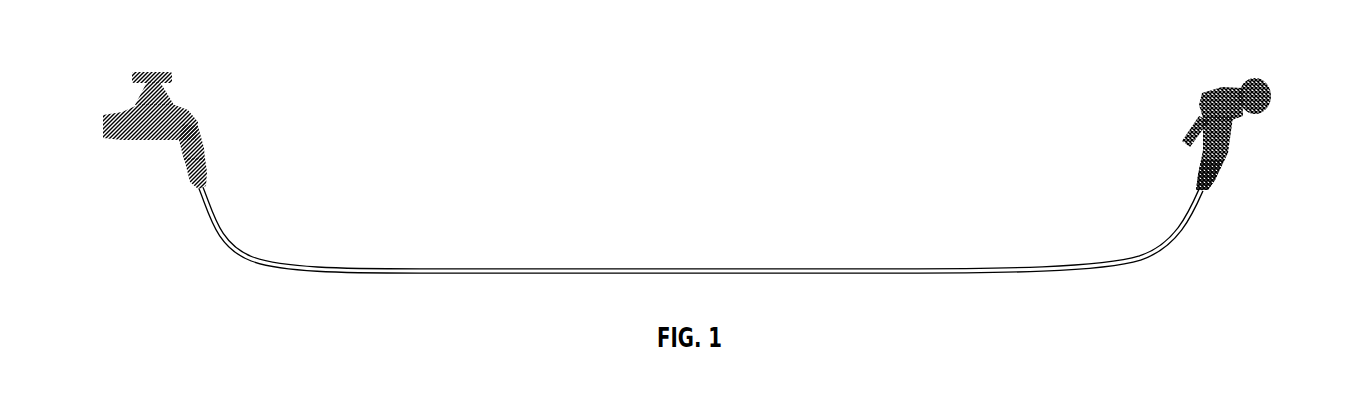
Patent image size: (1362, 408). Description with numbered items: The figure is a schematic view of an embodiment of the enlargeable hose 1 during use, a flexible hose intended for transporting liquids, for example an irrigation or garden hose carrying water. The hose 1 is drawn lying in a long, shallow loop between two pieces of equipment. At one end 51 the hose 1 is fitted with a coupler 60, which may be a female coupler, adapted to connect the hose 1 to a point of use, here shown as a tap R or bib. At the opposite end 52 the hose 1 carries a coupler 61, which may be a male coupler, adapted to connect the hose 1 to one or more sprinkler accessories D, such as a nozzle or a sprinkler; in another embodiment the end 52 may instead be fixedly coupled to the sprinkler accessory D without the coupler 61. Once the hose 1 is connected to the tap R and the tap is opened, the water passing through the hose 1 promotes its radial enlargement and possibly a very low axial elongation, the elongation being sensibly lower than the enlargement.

The hose 1 is at (700, 252).
The tap R is at (163, 127).
The sprinkler accessory D is at (1262, 92).
The end 51 is at (214, 177).
The end 52 is at (1234, 192).
The coupler 60 is at (187, 160).
The coupler 61 is at (1187, 128).